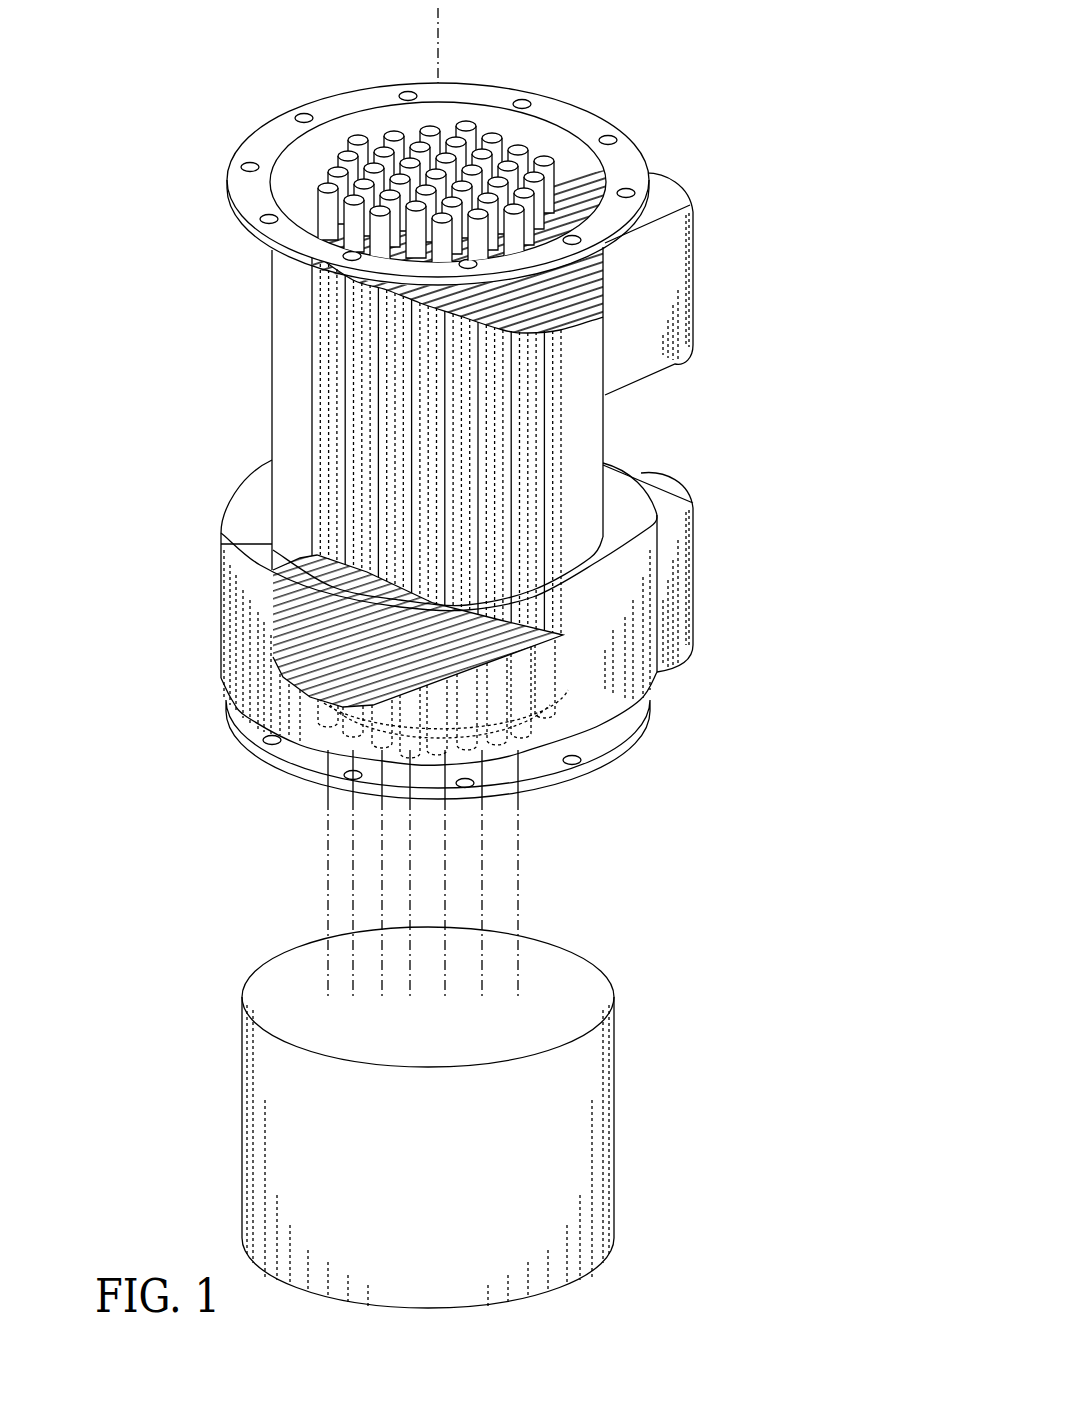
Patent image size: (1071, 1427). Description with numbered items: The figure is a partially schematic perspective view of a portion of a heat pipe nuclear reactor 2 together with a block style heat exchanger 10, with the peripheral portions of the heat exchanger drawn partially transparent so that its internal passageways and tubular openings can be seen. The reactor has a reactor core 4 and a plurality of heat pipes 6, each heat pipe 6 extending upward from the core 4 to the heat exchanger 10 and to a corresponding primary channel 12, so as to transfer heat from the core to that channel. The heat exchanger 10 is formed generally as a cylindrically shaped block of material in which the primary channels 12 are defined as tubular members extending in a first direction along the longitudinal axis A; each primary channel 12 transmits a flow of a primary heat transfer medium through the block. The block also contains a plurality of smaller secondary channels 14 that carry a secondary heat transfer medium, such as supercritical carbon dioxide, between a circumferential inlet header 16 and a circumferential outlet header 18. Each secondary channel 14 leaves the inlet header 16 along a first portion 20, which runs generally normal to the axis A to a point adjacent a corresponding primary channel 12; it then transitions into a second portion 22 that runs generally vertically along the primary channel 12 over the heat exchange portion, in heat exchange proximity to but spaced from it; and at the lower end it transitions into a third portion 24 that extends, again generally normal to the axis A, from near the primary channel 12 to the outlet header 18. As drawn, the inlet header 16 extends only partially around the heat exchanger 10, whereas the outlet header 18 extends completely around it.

The heat pipe nuclear reactor 2 is at (436, 658).
The reactor core 4 is at (267, 1120).
The heat pipes 6 is at (325, 864).
The block style heat exchanger 10 is at (639, 445).
The primary channels 12 is at (549, 160).
The secondary channels 14 is at (461, 420).
The circumferential inlet header 16 is at (685, 240).
The circumferential outlet header 18 is at (672, 633).
The first portion 20 is at (556, 284).
The second portion 22 is at (552, 507).
The third portion 24 is at (262, 551).
The longitudinal axis A is at (437, 48).